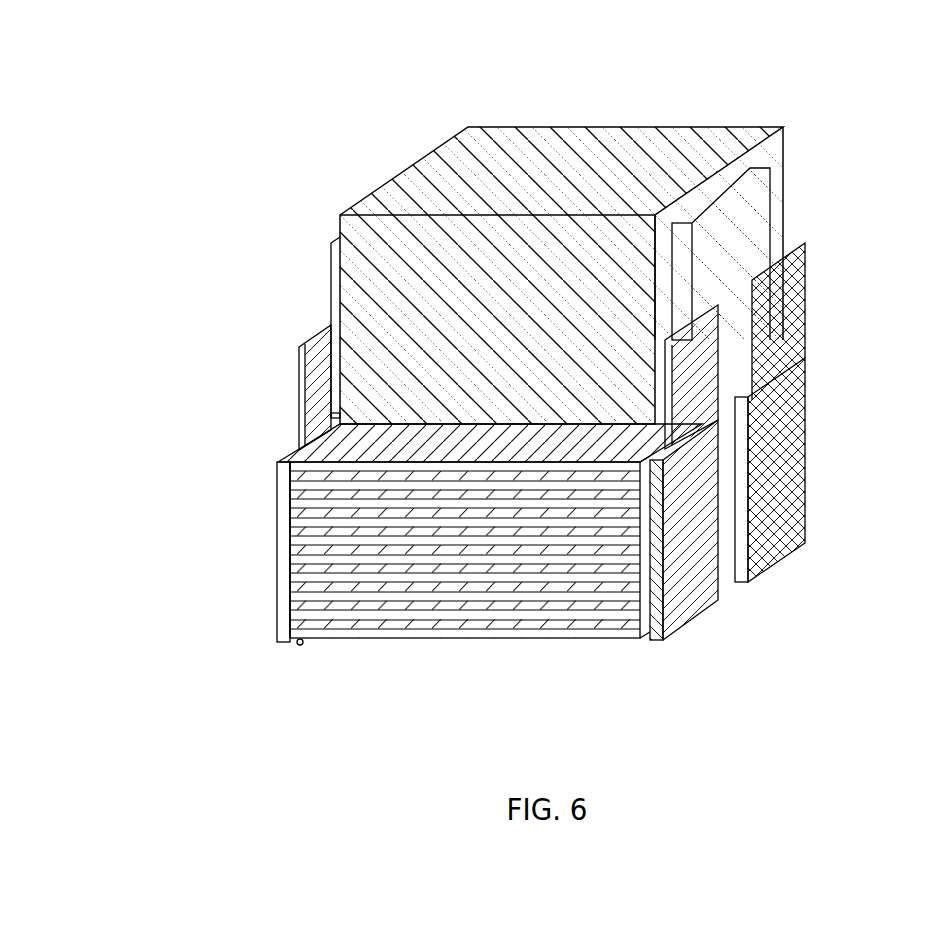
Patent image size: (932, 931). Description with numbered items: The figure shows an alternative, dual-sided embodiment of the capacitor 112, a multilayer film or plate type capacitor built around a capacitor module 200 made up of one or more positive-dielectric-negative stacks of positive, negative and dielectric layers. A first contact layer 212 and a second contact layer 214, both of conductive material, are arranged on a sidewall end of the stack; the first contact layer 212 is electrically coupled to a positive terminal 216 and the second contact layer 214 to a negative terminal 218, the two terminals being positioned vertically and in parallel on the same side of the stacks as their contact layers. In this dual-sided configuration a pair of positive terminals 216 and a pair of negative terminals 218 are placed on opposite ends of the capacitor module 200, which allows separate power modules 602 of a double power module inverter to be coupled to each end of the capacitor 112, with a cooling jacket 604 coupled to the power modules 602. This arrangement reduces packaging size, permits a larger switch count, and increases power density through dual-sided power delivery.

The capacitor 112 is at (192, 410).
The capacitor module 200 is at (257, 463).
The cooling jacket 604 is at (559, 148).
The power module 602 is at (750, 222).
The negative terminal 218 is at (685, 380).
The positive terminal 216 is at (787, 302).
The first contact layer 212 is at (783, 437).
The second contact layer 214 is at (688, 532).